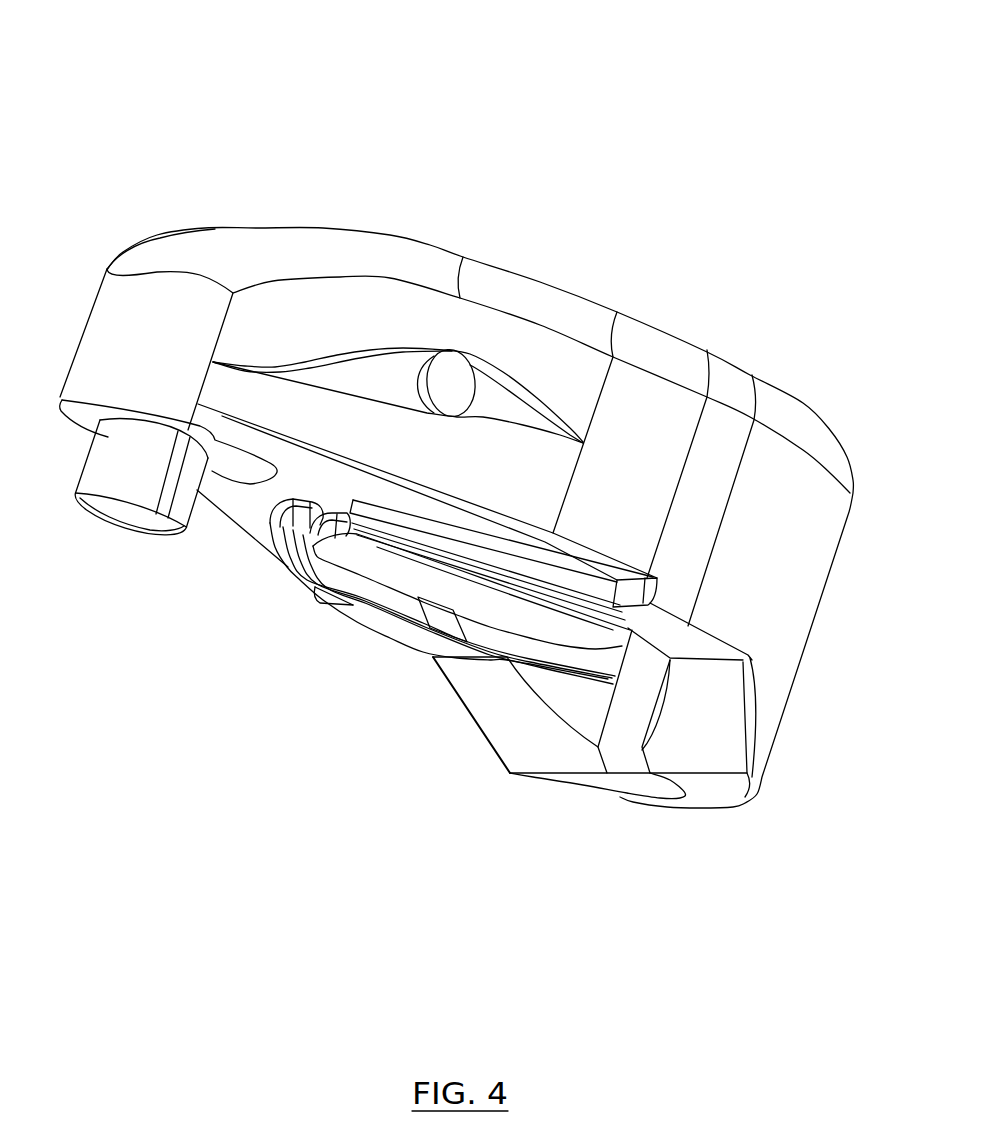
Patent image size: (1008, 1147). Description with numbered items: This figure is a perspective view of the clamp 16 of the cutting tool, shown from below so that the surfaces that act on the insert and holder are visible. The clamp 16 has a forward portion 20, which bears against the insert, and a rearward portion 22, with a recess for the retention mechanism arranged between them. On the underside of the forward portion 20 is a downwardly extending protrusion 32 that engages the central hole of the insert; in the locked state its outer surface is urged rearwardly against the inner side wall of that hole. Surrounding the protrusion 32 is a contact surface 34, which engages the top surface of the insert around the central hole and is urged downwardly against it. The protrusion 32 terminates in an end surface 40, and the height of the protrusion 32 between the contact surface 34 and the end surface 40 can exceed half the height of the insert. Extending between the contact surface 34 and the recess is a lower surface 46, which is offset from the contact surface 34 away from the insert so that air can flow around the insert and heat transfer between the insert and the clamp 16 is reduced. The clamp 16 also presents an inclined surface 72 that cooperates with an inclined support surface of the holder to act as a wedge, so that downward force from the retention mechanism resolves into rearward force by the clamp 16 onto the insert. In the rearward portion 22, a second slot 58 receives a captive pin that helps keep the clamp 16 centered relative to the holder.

The forward portion 20 is at (70, 220).
The clamp 16 is at (345, 252).
The rearward portion 22 is at (853, 628).
The protrusion 32 is at (107, 462).
The end surface 40 is at (123, 512).
The contact surface 34 is at (226, 460).
The lower surface 46 is at (248, 512).
The inclined surface 72 is at (515, 730).
The second slot 58 is at (652, 787).